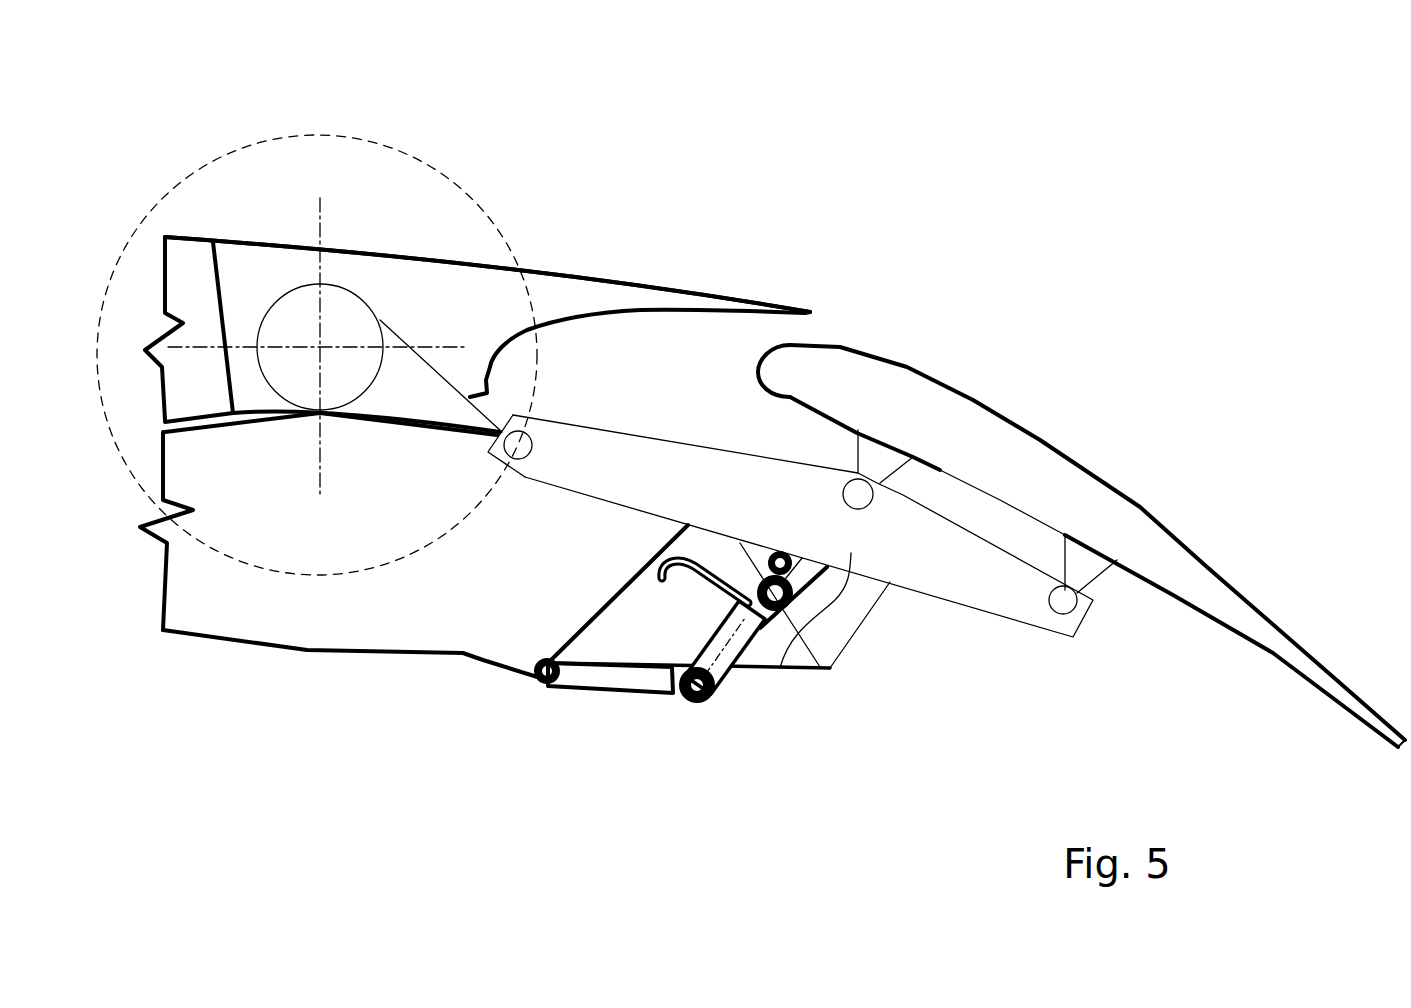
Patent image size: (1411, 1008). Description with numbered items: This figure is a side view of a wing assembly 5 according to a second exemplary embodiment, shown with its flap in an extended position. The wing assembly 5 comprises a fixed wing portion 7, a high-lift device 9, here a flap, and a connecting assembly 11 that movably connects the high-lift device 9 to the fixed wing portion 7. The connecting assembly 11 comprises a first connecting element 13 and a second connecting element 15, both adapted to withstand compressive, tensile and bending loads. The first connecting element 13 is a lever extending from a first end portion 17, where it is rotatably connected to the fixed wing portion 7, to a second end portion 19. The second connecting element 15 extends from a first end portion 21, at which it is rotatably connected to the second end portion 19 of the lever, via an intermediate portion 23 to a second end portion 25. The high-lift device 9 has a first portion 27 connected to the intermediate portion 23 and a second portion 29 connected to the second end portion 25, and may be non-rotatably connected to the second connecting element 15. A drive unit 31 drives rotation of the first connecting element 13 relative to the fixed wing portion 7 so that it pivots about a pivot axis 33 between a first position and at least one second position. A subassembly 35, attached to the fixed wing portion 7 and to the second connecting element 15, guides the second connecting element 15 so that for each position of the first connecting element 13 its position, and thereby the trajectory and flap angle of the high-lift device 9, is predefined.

The wing assembly 5 is at (677, 170).
The fixed wing portion 7 is at (640, 297).
The high-lift device 9 is at (1081, 497).
The connecting assembly 11 is at (553, 732).
The first connecting element 13 is at (417, 400).
The second connecting element 15 is at (970, 583).
The first end portion 17 is at (373, 402).
The second end portion 19 is at (473, 417).
The first end portion 21 is at (548, 482).
The intermediate portion 23 is at (776, 662).
The second end portion 25 is at (1042, 583).
The first portion 27 is at (893, 393).
The second portion 29 is at (1102, 517).
The drive unit 31 is at (338, 332).
The pivot axis 33 is at (319, 345).
The subassembly 35 is at (728, 723).